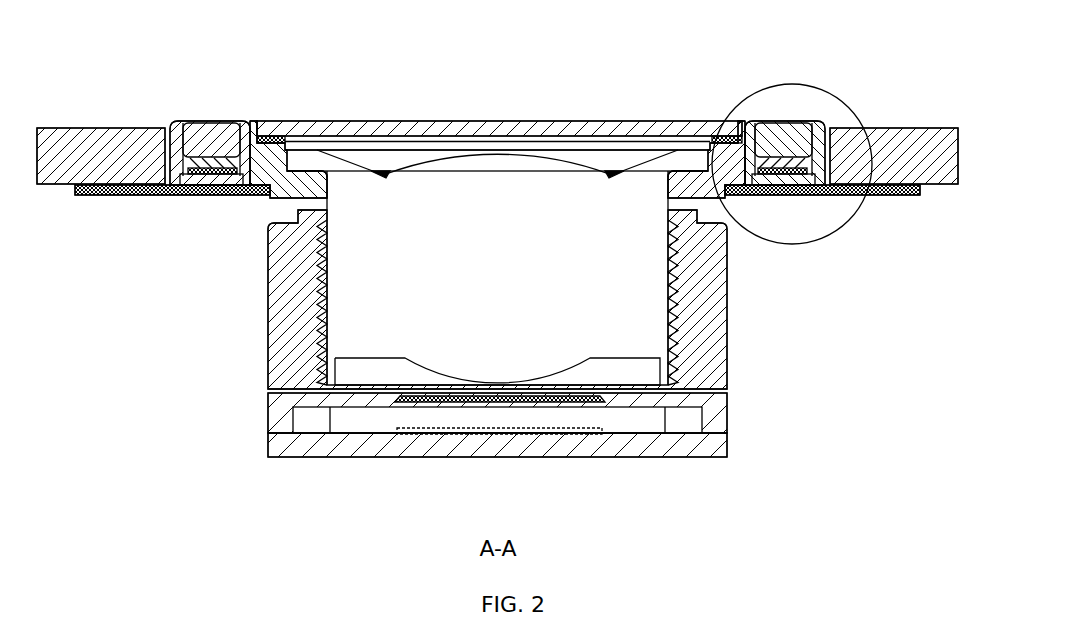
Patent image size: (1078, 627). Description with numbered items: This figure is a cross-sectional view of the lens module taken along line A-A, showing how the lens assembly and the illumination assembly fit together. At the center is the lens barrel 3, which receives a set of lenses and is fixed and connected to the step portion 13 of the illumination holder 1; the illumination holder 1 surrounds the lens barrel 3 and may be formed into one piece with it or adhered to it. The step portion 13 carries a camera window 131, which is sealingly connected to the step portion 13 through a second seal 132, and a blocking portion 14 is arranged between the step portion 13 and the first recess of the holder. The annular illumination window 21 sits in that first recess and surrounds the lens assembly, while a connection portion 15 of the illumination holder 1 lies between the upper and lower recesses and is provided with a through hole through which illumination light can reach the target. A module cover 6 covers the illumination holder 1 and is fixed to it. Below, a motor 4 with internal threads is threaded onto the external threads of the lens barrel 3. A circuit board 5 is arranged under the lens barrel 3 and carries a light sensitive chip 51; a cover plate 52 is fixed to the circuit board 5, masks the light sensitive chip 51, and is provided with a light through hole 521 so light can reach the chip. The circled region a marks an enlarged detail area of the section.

The illumination holder 1 is at (258, 160).
The step portion 13 is at (289, 152).
The camera window 131 is at (350, 133).
The second seal 132 is at (720, 140).
The blocking portion 14 is at (255, 128).
The connection portion 15 is at (203, 163).
The illumination window 21 is at (210, 130).
The lens barrel 3 is at (345, 292).
The motor 4 is at (283, 322).
The circuit board 5 is at (287, 447).
The light sensitive chip 51 is at (457, 432).
The cover plate 52 is at (280, 414).
The light through hole 521 is at (523, 402).
The module cover 6 is at (75, 138).
The detail region a is at (818, 88).